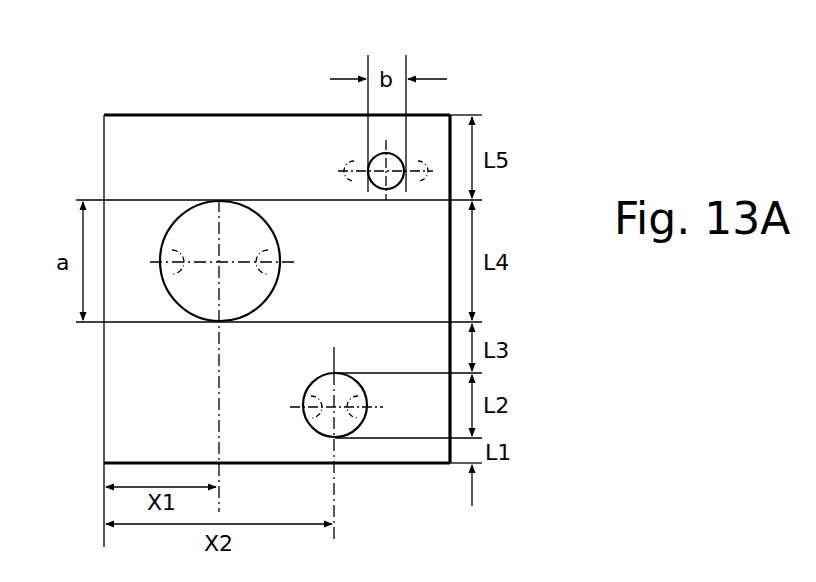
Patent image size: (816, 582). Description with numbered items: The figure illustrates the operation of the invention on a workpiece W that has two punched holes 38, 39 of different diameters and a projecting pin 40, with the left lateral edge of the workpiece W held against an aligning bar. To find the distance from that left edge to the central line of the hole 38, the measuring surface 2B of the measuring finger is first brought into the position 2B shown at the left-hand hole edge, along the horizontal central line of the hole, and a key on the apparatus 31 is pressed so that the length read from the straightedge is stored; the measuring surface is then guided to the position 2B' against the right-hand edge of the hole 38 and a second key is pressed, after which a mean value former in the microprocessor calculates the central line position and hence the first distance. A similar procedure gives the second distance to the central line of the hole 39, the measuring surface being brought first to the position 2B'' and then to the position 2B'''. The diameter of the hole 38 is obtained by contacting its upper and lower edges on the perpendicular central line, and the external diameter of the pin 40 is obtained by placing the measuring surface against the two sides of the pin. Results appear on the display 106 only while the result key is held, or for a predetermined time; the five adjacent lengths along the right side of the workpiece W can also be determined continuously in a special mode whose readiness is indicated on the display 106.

The workpiece W is at (104, 150).
The punched hole 38 is at (220, 198).
The projecting pin 40 is at (368, 190).
The punched hole 39 is at (318, 440).
The measuring surface 2B is at (160, 167).
The measuring surface position 2B' is at (250, 155).
The measuring surface position 2B'' is at (279, 378).
The measuring surface position 2B''' is at (397, 467).
The display 106 is at (643, 572).
The apparatus 31 is at (746, 580).